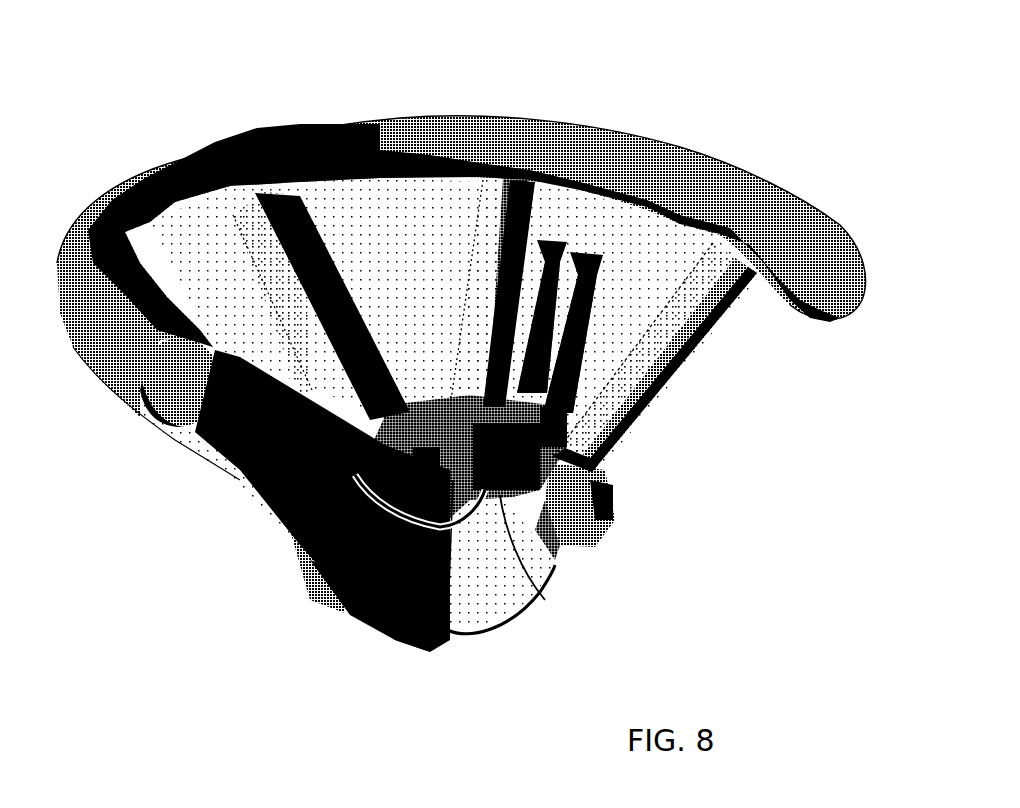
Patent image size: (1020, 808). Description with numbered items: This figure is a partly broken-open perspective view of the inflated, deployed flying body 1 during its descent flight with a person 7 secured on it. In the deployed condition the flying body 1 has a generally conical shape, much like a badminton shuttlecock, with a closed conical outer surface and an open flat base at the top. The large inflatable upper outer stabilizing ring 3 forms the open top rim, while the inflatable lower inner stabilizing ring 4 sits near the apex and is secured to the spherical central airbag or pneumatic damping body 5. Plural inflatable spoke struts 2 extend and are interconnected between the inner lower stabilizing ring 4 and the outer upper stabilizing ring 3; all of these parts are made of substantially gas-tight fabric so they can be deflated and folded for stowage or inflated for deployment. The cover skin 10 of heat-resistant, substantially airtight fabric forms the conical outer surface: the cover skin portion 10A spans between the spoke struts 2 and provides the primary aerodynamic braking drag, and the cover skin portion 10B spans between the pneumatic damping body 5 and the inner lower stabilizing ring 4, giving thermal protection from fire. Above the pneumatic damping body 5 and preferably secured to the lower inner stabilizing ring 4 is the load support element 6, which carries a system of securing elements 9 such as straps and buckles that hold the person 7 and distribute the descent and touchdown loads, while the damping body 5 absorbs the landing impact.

The flying body 1 is at (647, 122).
The spoke struts 2 is at (672, 358).
The upper outer stabilizing ring 3 is at (847, 307).
The lower inner stabilizing ring 4 is at (583, 511).
The pneumatic damping body 5 is at (495, 600).
The load support element 6 is at (447, 625).
The person 7 is at (545, 600).
The securing elements 9 is at (440, 625).
The cover skin 10 is at (205, 495).
The cover skin portion 10A is at (405, 278).
The cover skin portion 10B is at (350, 615).